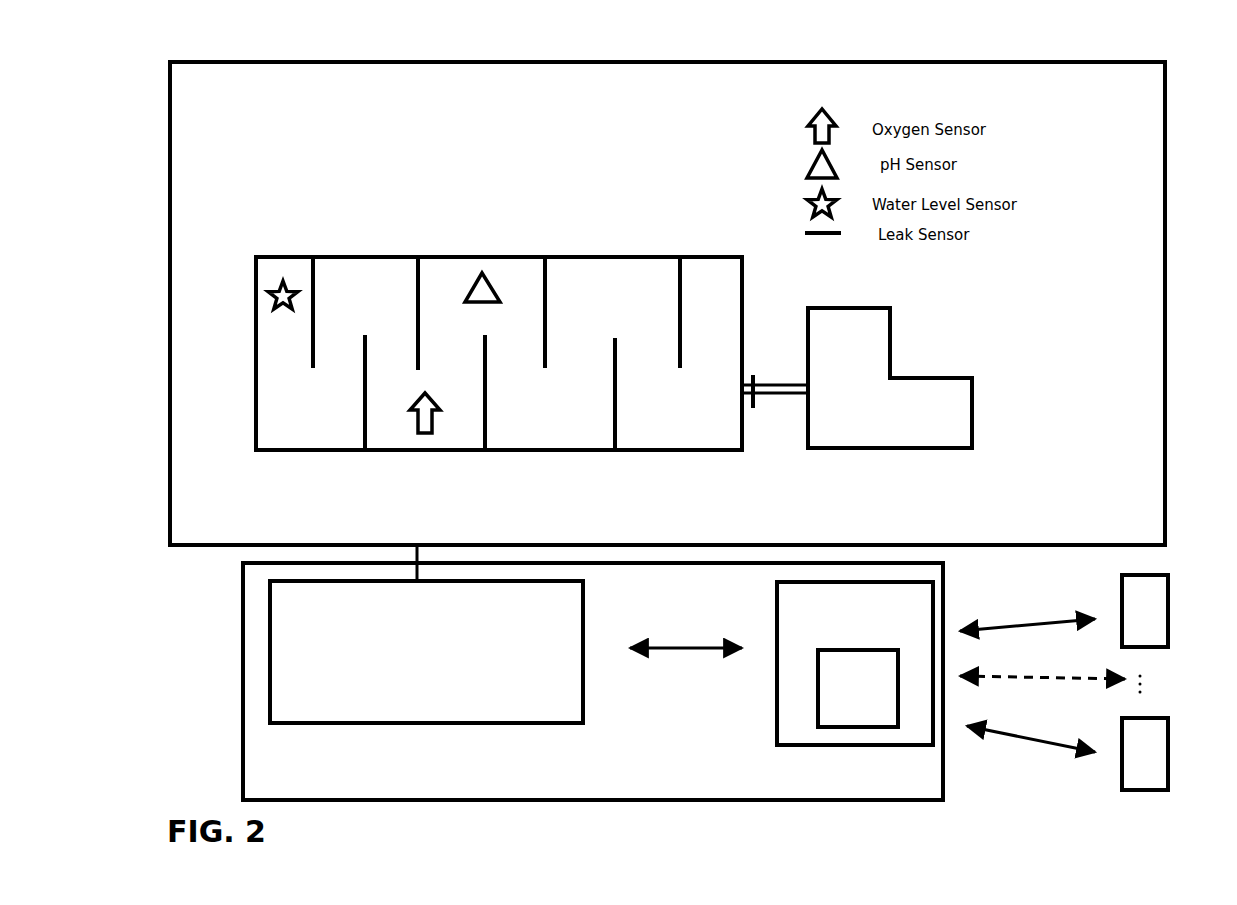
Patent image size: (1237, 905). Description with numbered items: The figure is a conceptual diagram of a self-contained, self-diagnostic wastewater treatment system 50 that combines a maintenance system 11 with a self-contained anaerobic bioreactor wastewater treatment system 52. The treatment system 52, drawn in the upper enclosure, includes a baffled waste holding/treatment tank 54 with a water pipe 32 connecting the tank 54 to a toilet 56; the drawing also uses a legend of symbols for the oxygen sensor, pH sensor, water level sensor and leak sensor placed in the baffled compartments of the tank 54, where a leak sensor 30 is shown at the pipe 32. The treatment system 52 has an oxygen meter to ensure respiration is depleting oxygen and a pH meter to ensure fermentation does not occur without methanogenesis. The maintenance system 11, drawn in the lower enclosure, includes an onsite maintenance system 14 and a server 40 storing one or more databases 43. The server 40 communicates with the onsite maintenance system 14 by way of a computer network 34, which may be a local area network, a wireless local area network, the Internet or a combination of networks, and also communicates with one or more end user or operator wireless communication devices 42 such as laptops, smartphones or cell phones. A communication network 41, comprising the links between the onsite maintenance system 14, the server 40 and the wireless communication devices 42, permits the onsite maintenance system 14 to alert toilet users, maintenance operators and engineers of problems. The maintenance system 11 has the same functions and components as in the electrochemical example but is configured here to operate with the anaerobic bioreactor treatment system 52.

The self-contained, self-diagnostic wastewater treatment system 50 is at (687, 295).
The anaerobic bioreactor wastewater treatment system 52 is at (1167, 190).
The baffled waste holding/treatment tank 54 is at (499, 353).
The toilet 56 is at (890, 378).
The water pipe 32 is at (784, 383).
The leak sensor 30 is at (760, 400).
The maintenance system 11 is at (233, 700).
The onsite maintenance system 14 is at (426, 652).
The computer network 34 is at (704, 655).
The server 40 is at (855, 663).
The database 43 is at (858, 688).
The communication network 41 is at (1040, 695).
The wireless communication device 42 is at (1172, 621).